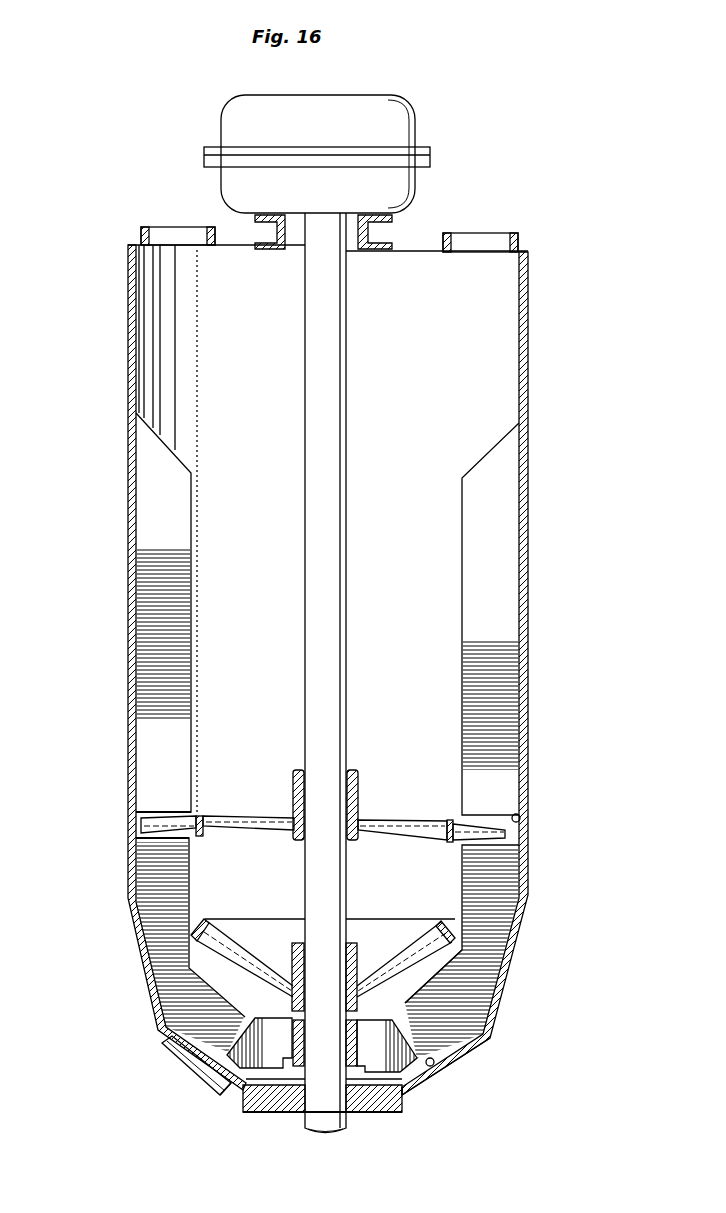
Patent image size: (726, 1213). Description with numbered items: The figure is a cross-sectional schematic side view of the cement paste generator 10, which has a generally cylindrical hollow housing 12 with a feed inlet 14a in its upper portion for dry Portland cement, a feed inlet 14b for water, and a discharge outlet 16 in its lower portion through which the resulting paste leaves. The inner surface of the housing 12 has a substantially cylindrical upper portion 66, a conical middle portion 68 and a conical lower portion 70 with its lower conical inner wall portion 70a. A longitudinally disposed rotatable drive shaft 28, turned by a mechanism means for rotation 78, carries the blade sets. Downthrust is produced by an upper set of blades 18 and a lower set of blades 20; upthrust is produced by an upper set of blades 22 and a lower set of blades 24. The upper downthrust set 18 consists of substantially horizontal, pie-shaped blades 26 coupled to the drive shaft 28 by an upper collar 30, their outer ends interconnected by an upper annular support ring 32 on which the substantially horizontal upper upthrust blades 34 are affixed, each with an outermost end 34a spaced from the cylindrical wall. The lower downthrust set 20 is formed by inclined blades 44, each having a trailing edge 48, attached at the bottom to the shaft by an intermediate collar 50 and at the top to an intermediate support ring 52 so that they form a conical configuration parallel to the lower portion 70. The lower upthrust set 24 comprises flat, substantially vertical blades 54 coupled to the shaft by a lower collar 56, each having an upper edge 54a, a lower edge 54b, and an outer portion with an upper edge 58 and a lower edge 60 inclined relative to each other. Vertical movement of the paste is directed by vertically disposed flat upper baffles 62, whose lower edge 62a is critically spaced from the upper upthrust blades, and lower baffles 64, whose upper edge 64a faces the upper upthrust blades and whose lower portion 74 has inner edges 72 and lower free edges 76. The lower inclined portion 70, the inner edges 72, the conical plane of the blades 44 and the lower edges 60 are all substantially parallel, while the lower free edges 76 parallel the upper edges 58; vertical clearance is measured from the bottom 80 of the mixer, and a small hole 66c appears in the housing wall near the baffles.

The cement paste generator 10 is at (604, 262).
The housing 12 is at (531, 352).
The feed inlet 14a is at (156, 236).
The feed inlet 14b is at (480, 240).
The discharge outlet 16 is at (185, 1060).
The upper set of downthrust blades 18 is at (258, 814).
The lower set of downthrust blades 20 is at (238, 914).
The upper set of upthrust blades 22 is at (164, 810).
The lower set of upthrust blades 24 is at (371, 1094).
The upper downthrust blade 26 is at (398, 822).
The drive shaft 28 is at (312, 378).
The upper collar 30 is at (358, 778).
The upper annular support ring 32 is at (205, 832).
The upper upthrust blade 34 is at (492, 830).
The outermost end of upper upthrust blade 34a is at (505, 841).
The inclined downthrust blade 44 is at (425, 940).
The trailing edge 48 is at (462, 962).
The intermediate collar 50 is at (293, 950).
The intermediate support ring 52 is at (455, 936).
The lower upthrust blade 54 is at (231, 1090).
The upper edge of lower upthrust blade 54a is at (285, 1020).
The lower edge of lower upthrust blade 54b is at (262, 1088).
The lower collar 56 is at (366, 1025).
The upper edge 58 is at (470, 1028).
The lower edge 60 is at (405, 1084).
The upper baffle 62 is at (505, 554).
The lower edge of upper baffle 62a is at (140, 823).
The lower baffle 64 is at (150, 922).
The upper edge of lower baffle 64a is at (150, 833).
The cylindrical upper portion 66 is at (130, 342).
The pivot hole 66c is at (520, 818).
The conical middle portion 68 is at (165, 968).
The conical lower portion 70 is at (458, 1060).
The lower conical inner wall portion 70a is at (434, 1064).
The inner edges 72 is at (185, 976).
The lower portion of lower baffle 74 is at (185, 1010).
The lower free edge 76 is at (214, 1087).
The mechanism means for rotation 78 is at (412, 112).
The bottom of the mixer 80 is at (285, 1092).